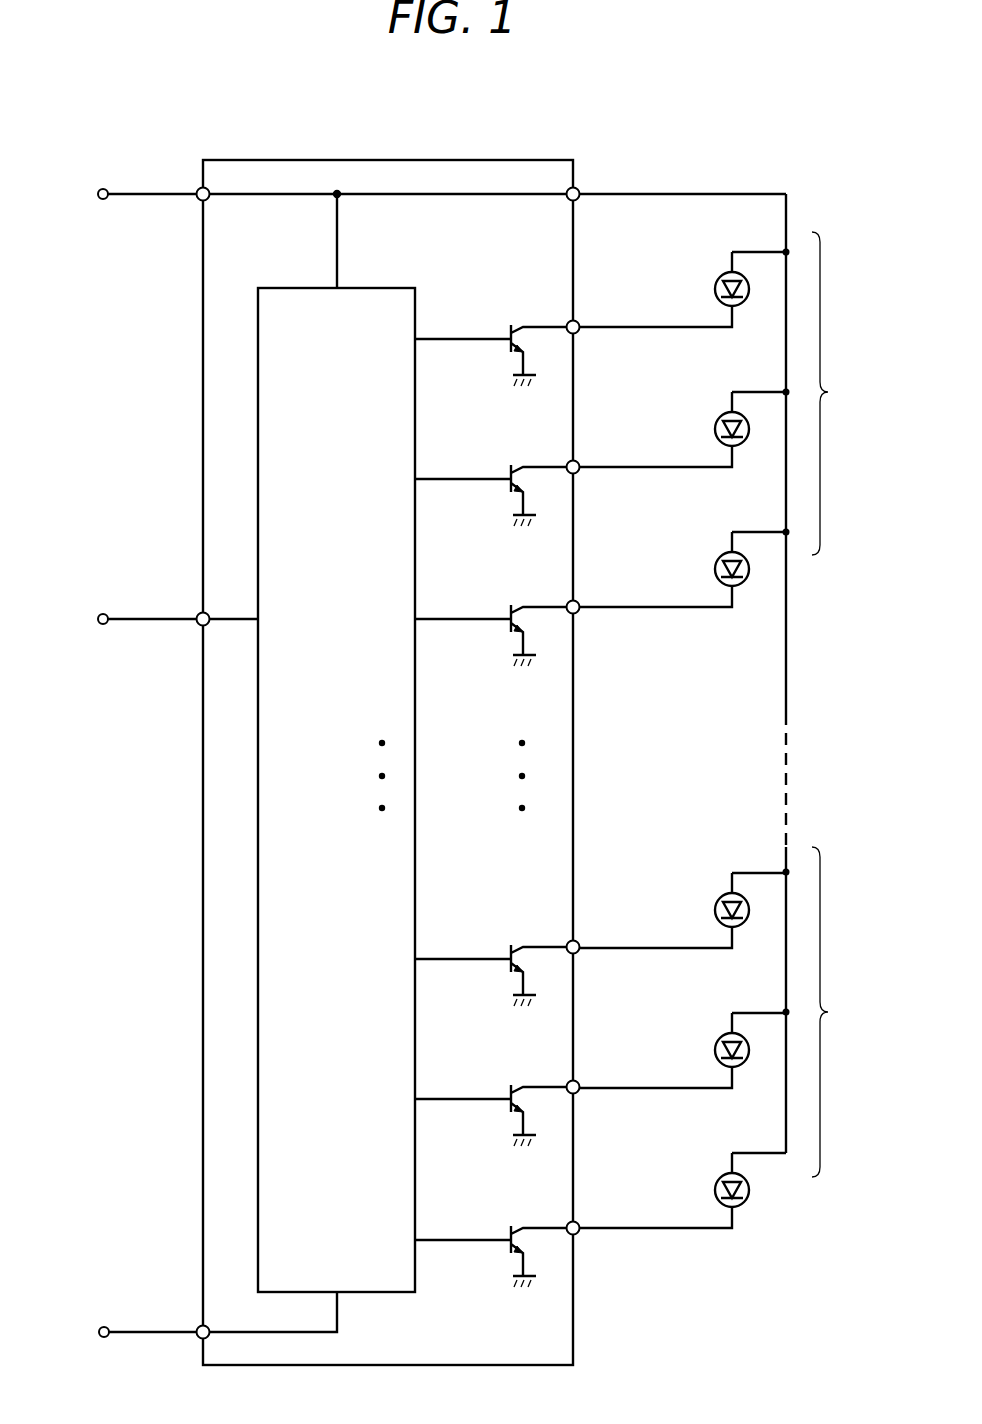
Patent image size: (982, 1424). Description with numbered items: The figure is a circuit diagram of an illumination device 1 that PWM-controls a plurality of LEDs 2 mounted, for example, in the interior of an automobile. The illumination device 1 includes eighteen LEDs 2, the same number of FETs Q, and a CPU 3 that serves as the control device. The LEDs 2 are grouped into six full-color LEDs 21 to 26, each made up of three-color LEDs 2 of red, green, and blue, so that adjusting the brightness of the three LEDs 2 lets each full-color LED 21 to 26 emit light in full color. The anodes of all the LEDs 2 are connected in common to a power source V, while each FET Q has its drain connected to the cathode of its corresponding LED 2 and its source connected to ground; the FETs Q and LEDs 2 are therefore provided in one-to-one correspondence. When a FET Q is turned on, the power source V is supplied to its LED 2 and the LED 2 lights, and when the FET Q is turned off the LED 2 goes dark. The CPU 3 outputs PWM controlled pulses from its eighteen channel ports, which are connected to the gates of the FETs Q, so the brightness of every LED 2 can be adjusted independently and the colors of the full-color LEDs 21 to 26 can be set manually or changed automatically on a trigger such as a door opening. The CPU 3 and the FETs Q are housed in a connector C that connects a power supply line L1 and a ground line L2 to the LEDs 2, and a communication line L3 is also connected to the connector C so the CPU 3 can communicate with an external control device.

The illumination device 1 is at (618, 173).
The LED 2 is at (715, 1189).
The CPU 3 is at (384, 287).
The full-color LED 21 is at (835, 393).
The full-color LED 26 is at (835, 1012).
The connector C is at (522, 160).
The FET Q is at (512, 1226).
The power source V is at (101, 190).
The power supply line L1 is at (152, 192).
The ground line L2 is at (152, 1330).
The communication line L3 is at (152, 617).